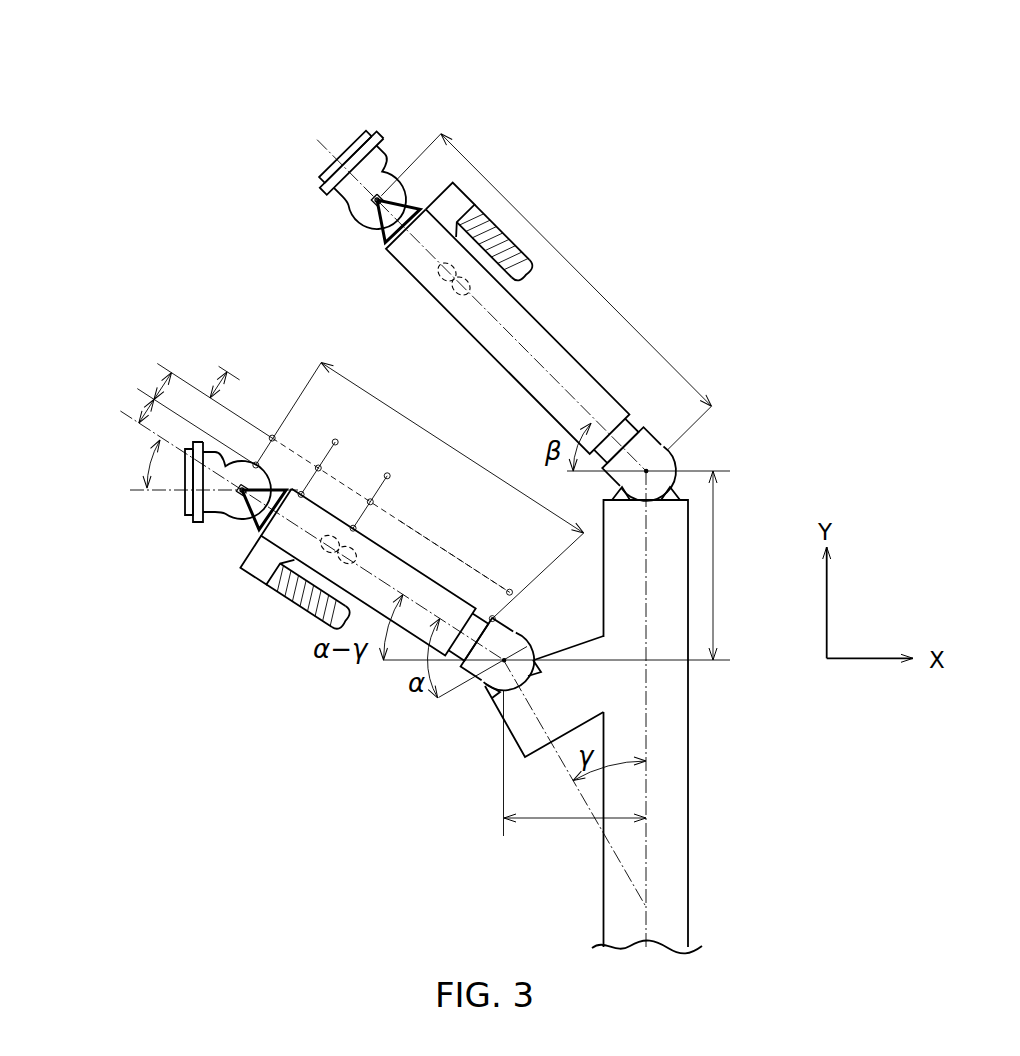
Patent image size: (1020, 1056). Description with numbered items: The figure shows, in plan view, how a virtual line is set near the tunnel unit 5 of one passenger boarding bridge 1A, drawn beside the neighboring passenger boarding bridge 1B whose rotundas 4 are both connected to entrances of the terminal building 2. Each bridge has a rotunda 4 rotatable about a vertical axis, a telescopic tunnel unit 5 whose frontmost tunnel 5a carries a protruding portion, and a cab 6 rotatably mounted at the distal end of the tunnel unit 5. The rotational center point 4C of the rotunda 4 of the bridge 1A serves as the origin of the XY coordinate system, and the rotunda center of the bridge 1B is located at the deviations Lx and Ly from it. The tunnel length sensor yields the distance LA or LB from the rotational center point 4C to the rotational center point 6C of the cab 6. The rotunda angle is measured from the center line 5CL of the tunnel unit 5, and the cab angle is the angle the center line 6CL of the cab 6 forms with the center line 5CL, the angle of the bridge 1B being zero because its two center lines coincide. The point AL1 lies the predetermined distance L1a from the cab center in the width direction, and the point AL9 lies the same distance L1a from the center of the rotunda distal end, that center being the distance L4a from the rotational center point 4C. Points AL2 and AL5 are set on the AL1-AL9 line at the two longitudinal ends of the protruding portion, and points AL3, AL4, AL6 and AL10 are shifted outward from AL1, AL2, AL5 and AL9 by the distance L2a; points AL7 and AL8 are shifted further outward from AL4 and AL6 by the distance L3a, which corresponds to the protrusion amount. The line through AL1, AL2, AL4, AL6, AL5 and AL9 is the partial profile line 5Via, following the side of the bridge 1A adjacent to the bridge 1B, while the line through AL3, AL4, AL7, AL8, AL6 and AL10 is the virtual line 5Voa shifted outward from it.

The passenger boarding bridge 1A is at (176, 534).
The passenger boarding bridge 1B is at (362, 108).
The terminal building 2 is at (688, 725).
The rotunda 4 is at (476, 688).
The rotational center point of the rotunda 4C is at (489, 683).
The tunnel unit 5 is at (338, 588).
The tunnel 5a is at (269, 585).
The cab 6 is at (184, 497).
The rotational center point of the cab 6C is at (239, 498).
The center line of the tunnel unit 5CL is at (118, 413).
The center line of the cab 6CL is at (142, 491).
The point AL1 is at (259, 464).
The point AL2 is at (304, 494).
The point AL3 is at (275, 437).
The point AL4 is at (321, 468).
The point AL5 is at (356, 528).
The point AL6 is at (373, 502).
The point AL7 is at (338, 442).
The point AL8 is at (390, 476).
The point AL9 is at (495, 619).
The point AL10 is at (512, 592).
The predetermined distance L1a is at (140, 419).
The predetermined distance L2a is at (158, 390).
The predetermined distance L3a is at (219, 366).
The distance LA is at (420, 491).
The distance LB is at (546, 292).
The predetermined distance L4a is at (558, 563).
The amount of deviation Lx is at (575, 839).
The amount of deviation Ly is at (728, 565).
The partial profile line 5Via is at (453, 553).
The virtual line 5Voa is at (493, 581).